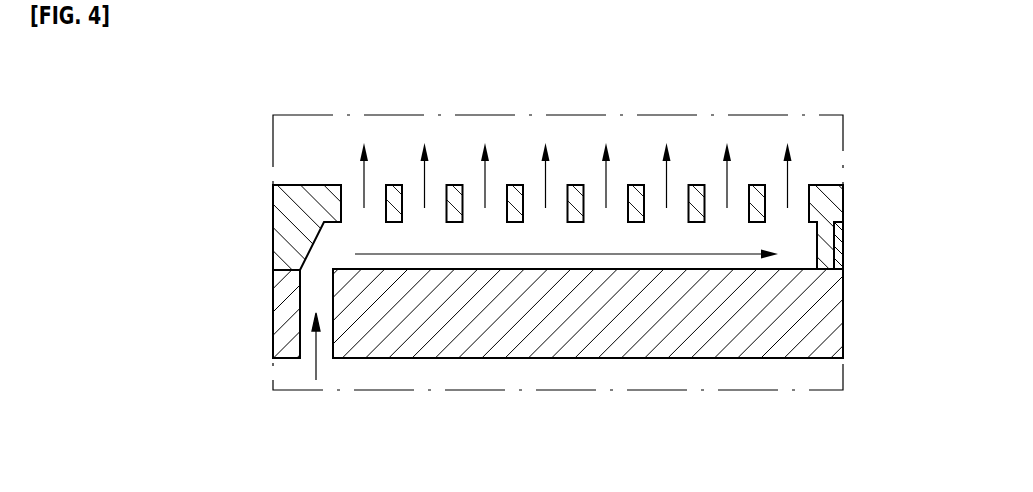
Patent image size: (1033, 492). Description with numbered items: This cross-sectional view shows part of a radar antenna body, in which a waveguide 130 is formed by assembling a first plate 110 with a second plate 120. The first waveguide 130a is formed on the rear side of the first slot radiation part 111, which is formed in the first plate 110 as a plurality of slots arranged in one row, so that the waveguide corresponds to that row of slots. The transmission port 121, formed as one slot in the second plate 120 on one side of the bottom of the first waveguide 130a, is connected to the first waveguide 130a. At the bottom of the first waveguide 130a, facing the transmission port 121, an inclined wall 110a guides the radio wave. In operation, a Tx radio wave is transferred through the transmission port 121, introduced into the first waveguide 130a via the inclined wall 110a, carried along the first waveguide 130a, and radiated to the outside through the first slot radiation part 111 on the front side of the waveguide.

The first plate 110 is at (832, 238).
The inclined wall 110a is at (235, 250).
The first slot radiation part 111 is at (800, 190).
The second plate 120 is at (818, 313).
The transmission port 121 is at (326, 352).
The waveguide 130 is at (235, 206).
The first waveguide 130a is at (305, 212).